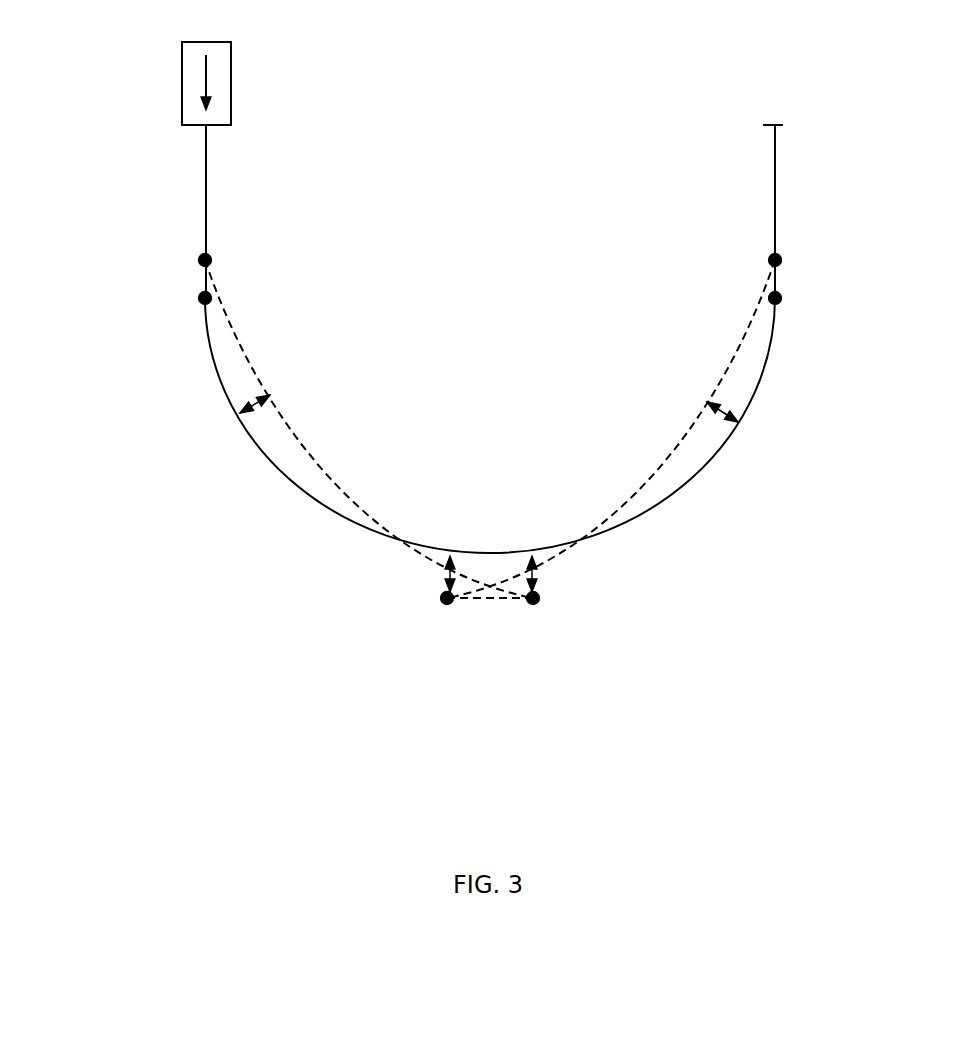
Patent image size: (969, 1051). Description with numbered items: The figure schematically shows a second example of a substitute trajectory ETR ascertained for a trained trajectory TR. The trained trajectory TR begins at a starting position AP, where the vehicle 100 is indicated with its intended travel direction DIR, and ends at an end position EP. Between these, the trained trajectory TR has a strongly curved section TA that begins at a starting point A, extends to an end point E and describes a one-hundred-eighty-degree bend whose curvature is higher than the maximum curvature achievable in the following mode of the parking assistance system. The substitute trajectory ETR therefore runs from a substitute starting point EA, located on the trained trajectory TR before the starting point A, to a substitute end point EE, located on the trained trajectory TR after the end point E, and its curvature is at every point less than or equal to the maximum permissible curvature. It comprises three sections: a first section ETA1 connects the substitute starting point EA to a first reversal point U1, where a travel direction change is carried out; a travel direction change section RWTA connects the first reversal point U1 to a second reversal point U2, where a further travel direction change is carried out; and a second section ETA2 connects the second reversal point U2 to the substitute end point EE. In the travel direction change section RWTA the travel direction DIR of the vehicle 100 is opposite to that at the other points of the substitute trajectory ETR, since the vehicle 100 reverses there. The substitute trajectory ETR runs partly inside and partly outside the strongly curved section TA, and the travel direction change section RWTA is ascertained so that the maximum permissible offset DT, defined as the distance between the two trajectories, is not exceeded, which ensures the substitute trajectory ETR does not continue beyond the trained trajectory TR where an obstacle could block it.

The vehicle 100 is at (182, 50).
The travel direction DIR is at (204, 85).
The starting position AP is at (133, 121).
The trained trajectory TR is at (206, 187).
The substitute starting point EA is at (200, 262).
The starting point A is at (202, 300).
The substitute trajectory ETR is at (335, 343).
The first section ETA1 is at (312, 458).
The second section ETA2 is at (688, 430).
The strongly curved section TA is at (310, 497).
The maximum permissible offset DT is at (245, 423).
The second reversal point U2 is at (447, 605).
The first reversal point U1 is at (533, 605).
The travel direction change section RWTA is at (495, 602).
The end position EP is at (780, 126).
The substitute end point EE is at (780, 262).
The end point E is at (782, 298).